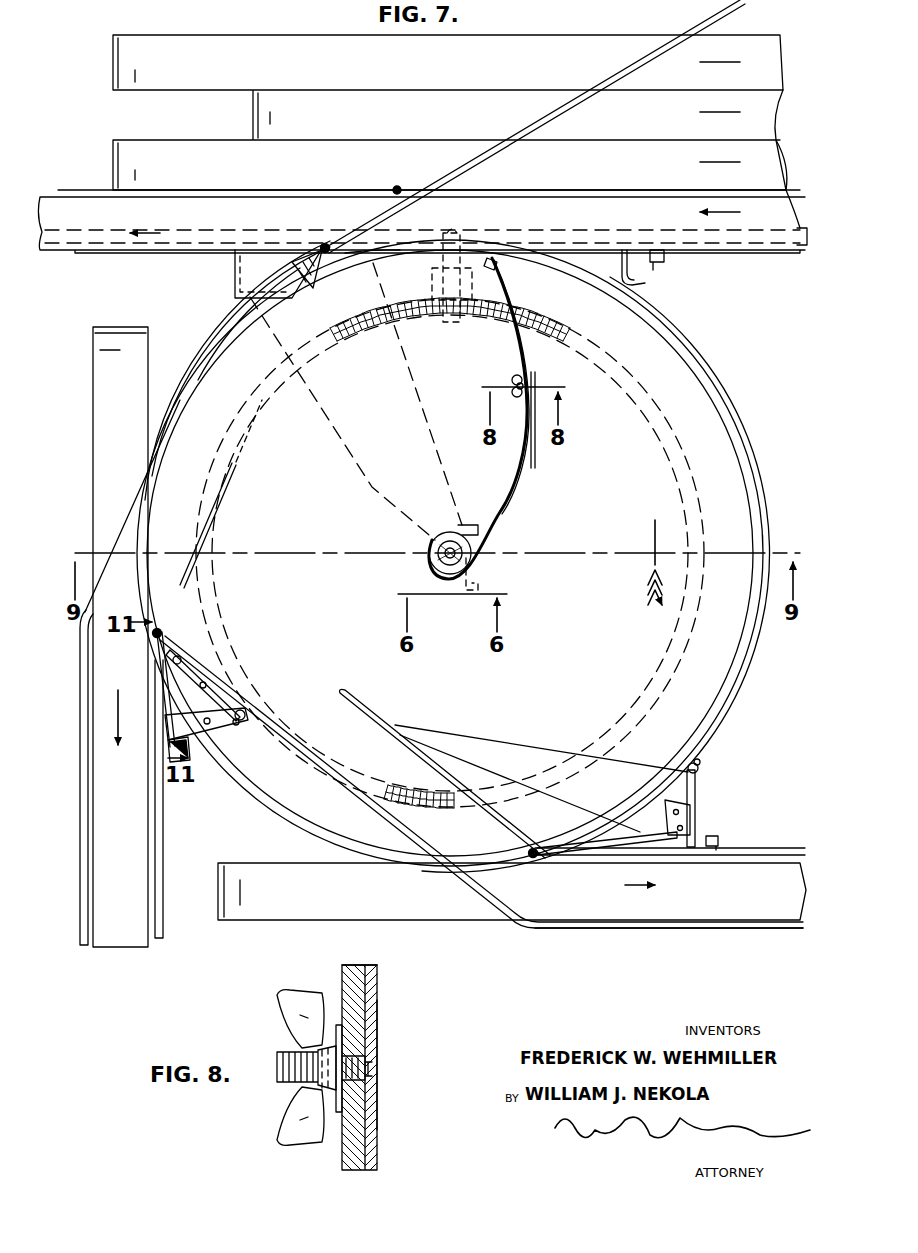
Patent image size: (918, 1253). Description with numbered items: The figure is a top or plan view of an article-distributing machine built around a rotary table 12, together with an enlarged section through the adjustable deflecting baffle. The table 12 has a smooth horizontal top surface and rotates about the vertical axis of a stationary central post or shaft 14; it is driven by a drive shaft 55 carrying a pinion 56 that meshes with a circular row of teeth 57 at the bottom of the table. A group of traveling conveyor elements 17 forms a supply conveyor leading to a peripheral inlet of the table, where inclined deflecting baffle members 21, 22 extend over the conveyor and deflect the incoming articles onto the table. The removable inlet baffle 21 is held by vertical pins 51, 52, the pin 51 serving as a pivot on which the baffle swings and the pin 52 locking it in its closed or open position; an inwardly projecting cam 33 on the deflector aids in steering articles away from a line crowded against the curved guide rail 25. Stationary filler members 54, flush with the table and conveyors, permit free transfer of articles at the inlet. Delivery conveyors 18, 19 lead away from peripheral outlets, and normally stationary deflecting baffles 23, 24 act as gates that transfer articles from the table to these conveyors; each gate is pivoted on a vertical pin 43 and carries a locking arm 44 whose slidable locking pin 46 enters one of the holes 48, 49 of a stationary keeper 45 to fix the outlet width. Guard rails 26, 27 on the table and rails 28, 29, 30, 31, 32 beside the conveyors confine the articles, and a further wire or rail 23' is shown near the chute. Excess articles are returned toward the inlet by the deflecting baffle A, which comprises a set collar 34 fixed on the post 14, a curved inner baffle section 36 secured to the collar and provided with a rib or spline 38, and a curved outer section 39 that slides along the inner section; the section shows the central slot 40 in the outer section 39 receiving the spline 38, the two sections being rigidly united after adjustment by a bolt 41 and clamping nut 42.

In FIG. 7, the rotary table 12 is at (732, 443).
In FIG. 7, the stationary vertical post or shaft 14 is at (444, 545).
In FIG. 7, the traveling conveyor elements 17 is at (772, 95).
In FIG. 7, the delivery conveyor 18 is at (115, 945).
In FIG. 7, the delivery conveyor 19 is at (408, 915).
In FIG. 7, the inclined deflecting baffle member 21 is at (355, 230).
In FIG. 7, the inclined deflecting baffle member 22 is at (515, 135).
In FIG. 7, the deflecting baffle 23 is at (221, 494).
In FIG. 7, the wire 23' is at (121, 506).
In FIG. 7, the deflecting baffle 24 is at (385, 700).
In FIG. 7, the curved guide rail 25 is at (220, 342).
In FIG. 7, the guard rail 26 is at (318, 768).
In FIG. 7, the guard rail 27 is at (760, 632).
In FIG. 7, the guard rail 28 is at (70, 197).
In FIG. 7, the guard rail 29 is at (78, 932).
In FIG. 7, the guard rail 30 is at (172, 930).
In FIG. 7, the guard rail 31 is at (775, 848).
In FIG. 7, the guard rail 32 is at (762, 935).
In FIG. 7, the inwardly projecting cam 33 is at (322, 283).
In FIG. 7, the set collar 34 is at (470, 525).
In FIG. 7, the curved inner baffle section 36 is at (520, 490).
In FIG. 8, the curved inner baffle section 36 is at (378, 1130).
In FIG. 8, the rib or spline 38 is at (380, 1045).
In FIG. 7, the curved outer baffle section 39 is at (548, 362).
In FIG. 8, the curved outer baffle section 39 is at (352, 965).
In FIG. 8, the central slot 40 is at (342, 1112).
In FIG. 8, the bolt 41 is at (286, 1086).
In FIG. 7, the clamping nut 42 is at (516, 383).
In FIG. 8, the clamping nut 42 is at (290, 1023).
In FIG. 7, the vertical pin 43 is at (155, 636).
In FIG. 7, the locking arm 44 is at (160, 688).
In FIG. 7, the stationary keeper 45 is at (212, 725).
In FIG. 7, the slidable locking pin 46 is at (168, 740).
In FIG. 7, the hole 48 is at (215, 660).
In FIG. 7, the hole 49 is at (242, 700).
In FIG. 7, the vertical pin 51 is at (397, 190).
In FIG. 7, the vertical pin 52 is at (322, 246).
In FIG. 7, the stationary filler member 54 is at (356, 262).
In FIG. 7, the drive shaft 55 is at (470, 240).
In FIG. 7, the pinion 56 is at (398, 300).
In FIG. 7, the circular row of teeth 57 is at (358, 345).
In FIG. 7, the deflecting baffle A is at (532, 480).
In FIG. 8, the deflecting baffle A is at (380, 1000).